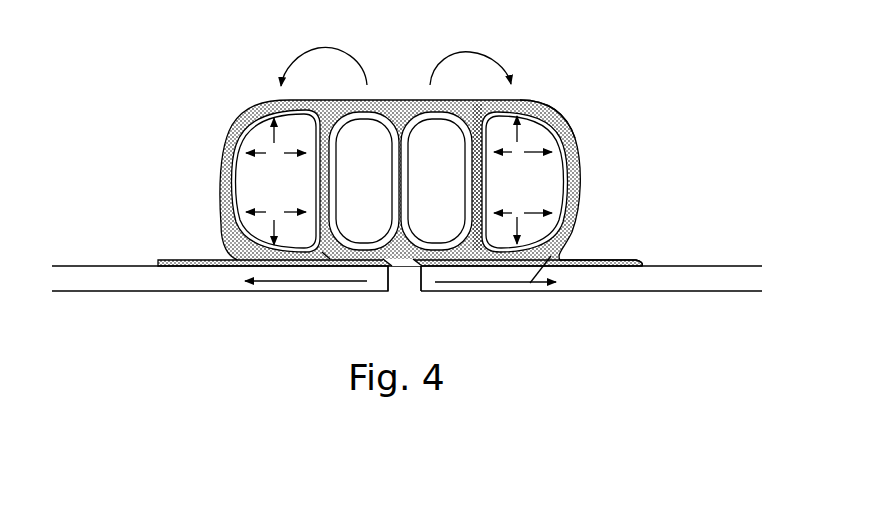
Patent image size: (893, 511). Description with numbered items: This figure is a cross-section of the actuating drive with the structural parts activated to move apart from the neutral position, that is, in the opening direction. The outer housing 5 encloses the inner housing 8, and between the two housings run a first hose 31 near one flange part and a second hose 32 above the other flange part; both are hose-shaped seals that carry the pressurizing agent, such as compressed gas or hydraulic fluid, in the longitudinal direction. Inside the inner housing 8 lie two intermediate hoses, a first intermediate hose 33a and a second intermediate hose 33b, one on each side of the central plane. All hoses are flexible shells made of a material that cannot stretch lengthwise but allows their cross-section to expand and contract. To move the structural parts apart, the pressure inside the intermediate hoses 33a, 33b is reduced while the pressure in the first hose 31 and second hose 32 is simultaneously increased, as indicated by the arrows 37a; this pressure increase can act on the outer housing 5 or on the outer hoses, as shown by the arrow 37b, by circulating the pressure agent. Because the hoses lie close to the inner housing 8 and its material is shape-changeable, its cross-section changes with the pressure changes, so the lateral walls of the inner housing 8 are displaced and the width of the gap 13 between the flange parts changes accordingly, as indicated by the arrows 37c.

The outer housing 5 is at (527, 106).
The inner housing 8 is at (480, 108).
The gap 13 is at (399, 284).
The first hose 31 is at (545, 114).
The second hose 32 is at (236, 183).
The first intermediate hose 33a is at (342, 122).
The second intermediate hose 33b is at (415, 122).
The arrows 37a is at (530, 157).
The arrow 37b is at (365, 66).
The arrows 37c is at (551, 256).